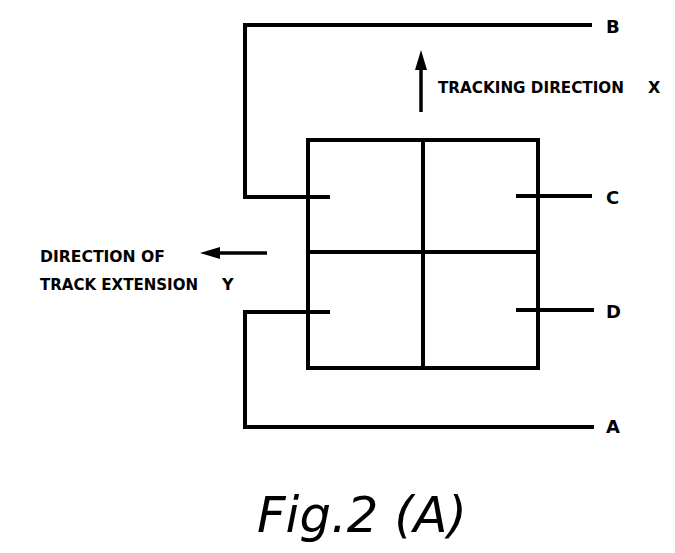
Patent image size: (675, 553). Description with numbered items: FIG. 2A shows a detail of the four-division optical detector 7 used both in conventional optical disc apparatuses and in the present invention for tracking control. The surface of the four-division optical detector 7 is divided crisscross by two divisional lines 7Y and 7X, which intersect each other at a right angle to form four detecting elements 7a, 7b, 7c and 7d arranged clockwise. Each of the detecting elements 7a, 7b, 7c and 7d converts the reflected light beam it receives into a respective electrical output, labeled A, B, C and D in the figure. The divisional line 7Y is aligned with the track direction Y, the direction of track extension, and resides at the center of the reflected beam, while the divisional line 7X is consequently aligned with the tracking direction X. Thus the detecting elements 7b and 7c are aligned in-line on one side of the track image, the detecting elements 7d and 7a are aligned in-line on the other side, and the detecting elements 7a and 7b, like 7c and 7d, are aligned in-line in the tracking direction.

The 4-division optical detector 7 is at (539, 338).
The detecting element 7a is at (365, 353).
The detecting element 7b is at (363, 163).
The detecting element 7c is at (520, 170).
The detecting element 7d is at (497, 352).
The divisional line 7X is at (423, 343).
The divisional line 7Y is at (517, 251).